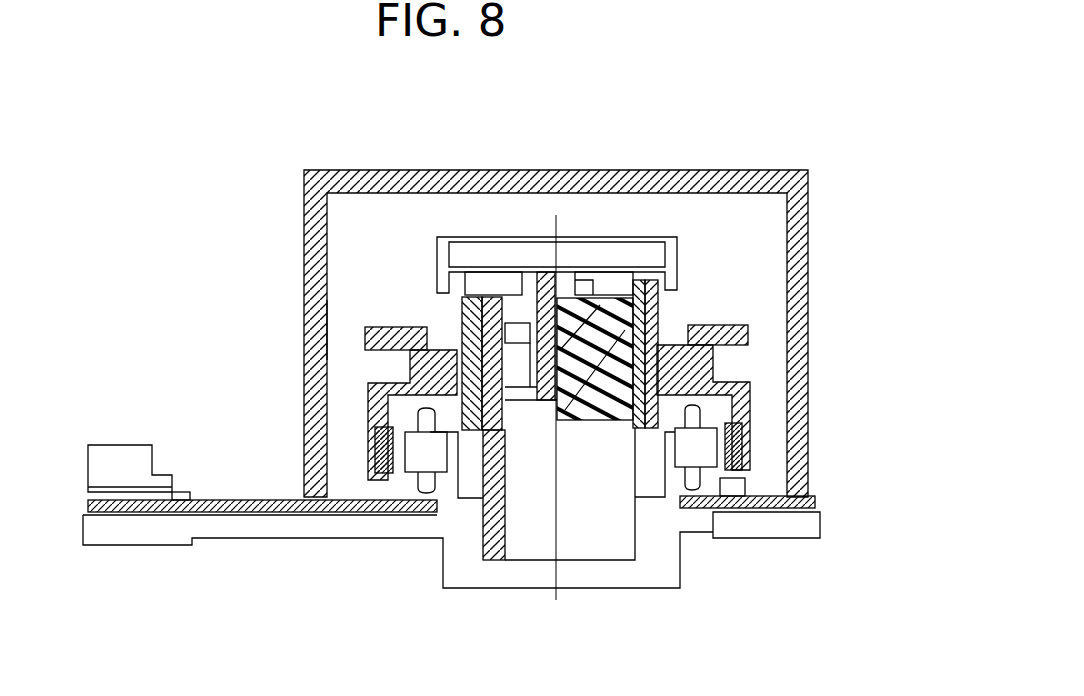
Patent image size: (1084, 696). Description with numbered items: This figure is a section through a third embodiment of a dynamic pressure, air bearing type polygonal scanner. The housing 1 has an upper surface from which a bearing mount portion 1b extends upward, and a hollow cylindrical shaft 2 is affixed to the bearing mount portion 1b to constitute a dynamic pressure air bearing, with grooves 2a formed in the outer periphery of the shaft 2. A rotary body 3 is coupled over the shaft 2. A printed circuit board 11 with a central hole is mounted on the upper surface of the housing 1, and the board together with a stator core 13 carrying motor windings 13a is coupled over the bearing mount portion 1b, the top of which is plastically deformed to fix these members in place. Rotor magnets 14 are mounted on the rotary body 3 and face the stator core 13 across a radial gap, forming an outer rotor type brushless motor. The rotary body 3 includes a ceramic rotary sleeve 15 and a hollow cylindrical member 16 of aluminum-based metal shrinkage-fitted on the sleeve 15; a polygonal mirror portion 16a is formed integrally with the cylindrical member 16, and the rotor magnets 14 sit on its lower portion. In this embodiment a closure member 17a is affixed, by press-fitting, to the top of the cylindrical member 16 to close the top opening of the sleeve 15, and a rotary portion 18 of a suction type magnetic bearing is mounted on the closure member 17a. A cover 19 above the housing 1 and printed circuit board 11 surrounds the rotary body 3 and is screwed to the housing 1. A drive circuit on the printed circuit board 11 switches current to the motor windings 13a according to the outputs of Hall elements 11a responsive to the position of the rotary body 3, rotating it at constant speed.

The housing 1 is at (467, 558).
The bearing mount portion 1b is at (418, 460).
The hollow cylindrical shaft 2 is at (600, 533).
The grooves 2a is at (617, 340).
The rotary body 3 is at (346, 385).
The printed circuit board 11 is at (250, 512).
The Hall elements 11a is at (738, 488).
The stator core 13 is at (693, 450).
The motor windings 13a is at (368, 453).
The rotor magnets 14 is at (752, 427).
The rotary sleeve 15 is at (713, 330).
The cylindrical member 16 is at (408, 330).
The polygonal mirror portion 16a is at (752, 334).
The closure member 17a is at (663, 257).
The rotary portion 18 is at (523, 283).
The cover 19 is at (322, 328).